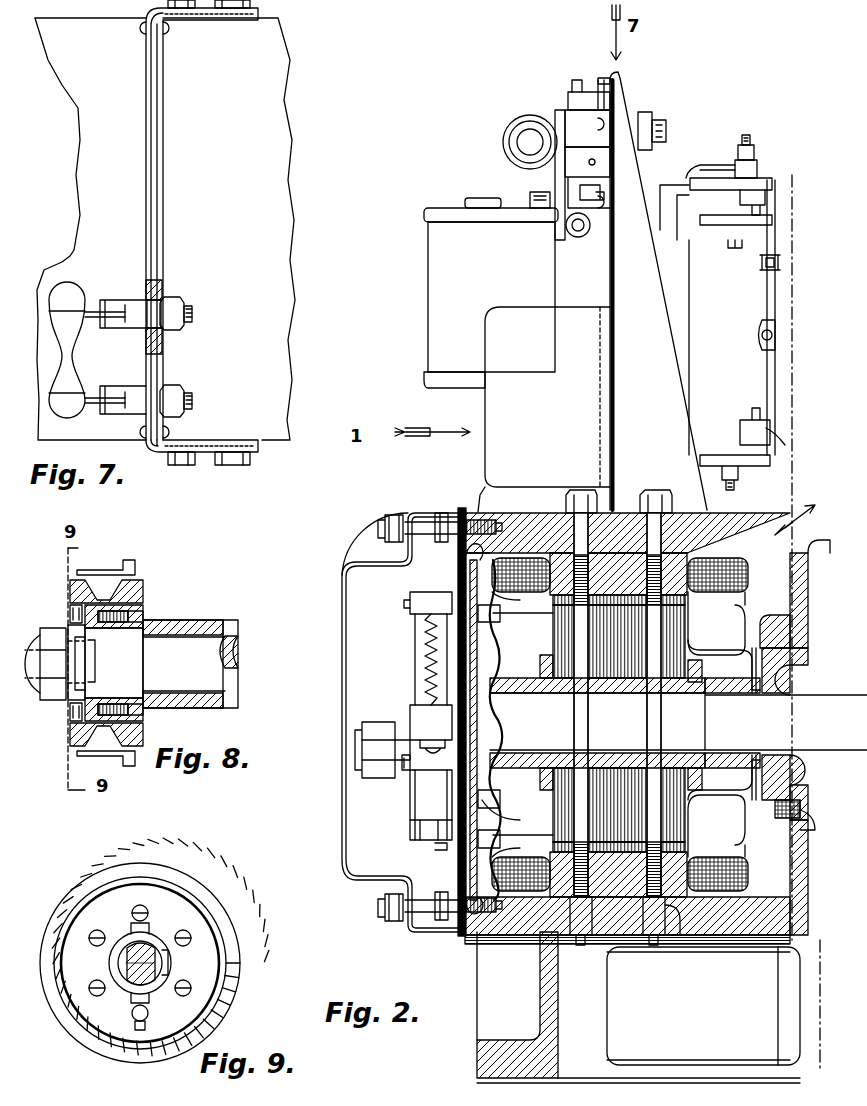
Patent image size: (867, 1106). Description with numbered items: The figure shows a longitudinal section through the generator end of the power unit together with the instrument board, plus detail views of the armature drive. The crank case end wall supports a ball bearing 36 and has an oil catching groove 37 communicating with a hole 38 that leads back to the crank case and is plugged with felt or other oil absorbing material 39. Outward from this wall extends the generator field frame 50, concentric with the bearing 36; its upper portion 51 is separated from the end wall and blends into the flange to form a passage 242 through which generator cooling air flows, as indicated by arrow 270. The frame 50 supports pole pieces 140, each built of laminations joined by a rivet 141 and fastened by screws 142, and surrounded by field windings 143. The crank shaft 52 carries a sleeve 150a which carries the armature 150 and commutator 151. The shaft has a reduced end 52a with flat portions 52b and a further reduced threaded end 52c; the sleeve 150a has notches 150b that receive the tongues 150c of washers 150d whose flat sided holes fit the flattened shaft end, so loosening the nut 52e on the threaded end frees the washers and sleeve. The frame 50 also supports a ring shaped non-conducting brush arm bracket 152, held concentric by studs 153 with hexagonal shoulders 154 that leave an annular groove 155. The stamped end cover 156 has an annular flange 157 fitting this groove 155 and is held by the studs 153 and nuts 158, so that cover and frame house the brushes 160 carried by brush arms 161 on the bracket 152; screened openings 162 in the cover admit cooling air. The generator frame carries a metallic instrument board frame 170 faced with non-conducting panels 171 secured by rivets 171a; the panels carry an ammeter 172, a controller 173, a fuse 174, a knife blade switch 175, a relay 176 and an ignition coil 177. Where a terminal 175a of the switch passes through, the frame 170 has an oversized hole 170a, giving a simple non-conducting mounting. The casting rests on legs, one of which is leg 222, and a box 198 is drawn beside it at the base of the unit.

In FIG. 2, the ball bearing 36 is at (782, 665).
In FIG. 2, the oil catching groove 37 is at (767, 622).
In FIG. 2, the hole 38 is at (770, 820).
In FIG. 2, the oil absorbing material 39 is at (790, 810).
In FIG. 2, the generator field frame 50 is at (486, 526).
In FIG. 2, the frame portion 51 is at (776, 512).
In FIG. 8, the crank shaft 52 is at (165, 640).
In FIG. 2, the crank shaft 52 is at (770, 732).
In FIG. 8, the reduced end 52a is at (90, 646).
In FIG. 9, the reduced end 52a is at (135, 935).
In FIG. 8, the flat portions 52b is at (88, 672).
In FIG. 9, the flat portions 52b is at (125, 955).
In FIG. 8, the threaded reduced end 52c is at (70, 628).
In FIG. 9, the threaded reduced end 52c is at (133, 978).
In FIG. 8, the shaft nut 52e is at (50, 700).
In FIG. 2, the pole pieces 140 is at (560, 513).
In FIG. 2, the rivet 141 is at (630, 497).
In FIG. 2, the screws 142 is at (680, 920).
In FIG. 2, the field windings 143 is at (735, 572).
In FIG. 2, the armature 150 is at (520, 628).
In FIG. 8, the sleeve 150a is at (205, 625).
In FIG. 2, the sleeve 150a is at (525, 688).
In FIG. 8, the notches 150b is at (90, 613).
In FIG. 9, the notches 150b is at (143, 938).
In FIG. 8, the tongues 150c is at (70, 615).
In FIG. 9, the tongues 150c is at (136, 931).
In FIG. 8, the washers 150d is at (78, 662).
In FIG. 9, the washers 150d is at (166, 967).
In FIG. 8, the commutator 151 is at (130, 578).
In FIG. 9, the commutator 151 is at (198, 884).
In FIG. 2, the commutator 151 is at (412, 777).
In FIG. 2, the brush arm bracket 152 is at (460, 515).
In FIG. 2, the studs 153 is at (418, 515).
In FIG. 2, the hexagonal shoulders 154 is at (440, 515).
In FIG. 2, the annular groove 155 is at (466, 520).
In FIG. 2, the generator end cover 156 is at (398, 555).
In FIG. 2, the annular flange 157 is at (470, 935).
In FIG. 2, the nuts 158 is at (388, 527).
In FIG. 2, the brushes 160 is at (420, 720).
In FIG. 2, the brush arms 161 is at (438, 592).
In FIG. 2, the screened openings 162 is at (342, 812).
In FIG. 7, the instrument board frame 170 is at (153, 104).
In FIG. 2, the instrument board frame 170 is at (622, 99).
In FIG. 7, the hole 170a is at (158, 328).
In FIG. 7, the non-conducting panels 171 is at (147, 133).
In FIG. 2, the non-conducting panels 171 is at (604, 65).
In FIG. 7, the rivets 171a is at (143, 30).
In FIG. 2, the rivets 171a is at (600, 88).
In FIG. 2, the ammeter 172 is at (568, 100).
In FIG. 2, the controller 173 is at (432, 290).
In FIG. 2, the fuse 174 is at (556, 178).
In FIG. 7, the knife blade switch 175 is at (70, 328).
In FIG. 2, the knife blade switch 175 is at (522, 143).
In FIG. 7, the terminal 175a is at (154, 312).
In FIG. 2, the relay 176 is at (497, 320).
In FIG. 2, the ignition coil 177 is at (750, 237).
In FIG. 2, the base box 198 is at (655, 1040).
In FIG. 2, the leg 222 is at (476, 1050).
In FIG. 2, the passage 242 is at (735, 479).
In FIG. 2, the arrow 270 is at (775, 528).